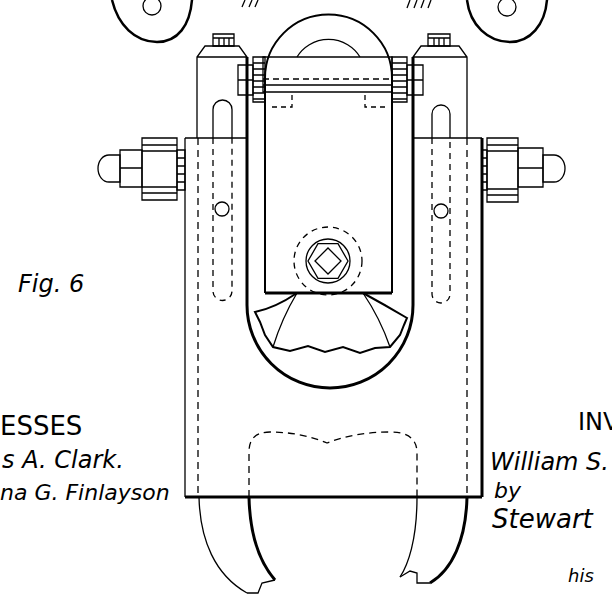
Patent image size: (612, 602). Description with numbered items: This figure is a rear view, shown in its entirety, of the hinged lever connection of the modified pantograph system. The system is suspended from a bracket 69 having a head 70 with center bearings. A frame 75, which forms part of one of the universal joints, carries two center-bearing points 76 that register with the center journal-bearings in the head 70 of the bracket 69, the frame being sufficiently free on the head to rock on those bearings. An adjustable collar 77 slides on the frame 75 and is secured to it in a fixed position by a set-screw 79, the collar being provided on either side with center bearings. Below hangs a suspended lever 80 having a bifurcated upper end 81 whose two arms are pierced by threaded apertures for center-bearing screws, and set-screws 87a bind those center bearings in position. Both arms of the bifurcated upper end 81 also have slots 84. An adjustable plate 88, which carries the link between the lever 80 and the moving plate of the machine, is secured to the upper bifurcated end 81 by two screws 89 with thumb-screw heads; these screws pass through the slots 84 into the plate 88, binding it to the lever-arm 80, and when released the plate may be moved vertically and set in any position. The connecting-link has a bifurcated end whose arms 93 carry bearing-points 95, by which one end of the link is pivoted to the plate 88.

The bracket 69 is at (331, 323).
The head 70 is at (304, 237).
The frame 75 is at (328, 154).
The center-bearing points 76 is at (348, 256).
The adjustable collar 77 is at (257, 57).
The set-screw 79 is at (306, 78).
The suspended lever 80 is at (417, 542).
The bifurcated upper end 81 is at (417, 108).
The slots 84 is at (227, 118).
The set-screws 87a is at (468, 24).
The adjustable plate 88 is at (452, 358).
The screws 89 is at (215, 210).
The arms 93 is at (156, 138).
The bearing-points 95 is at (96, 170).